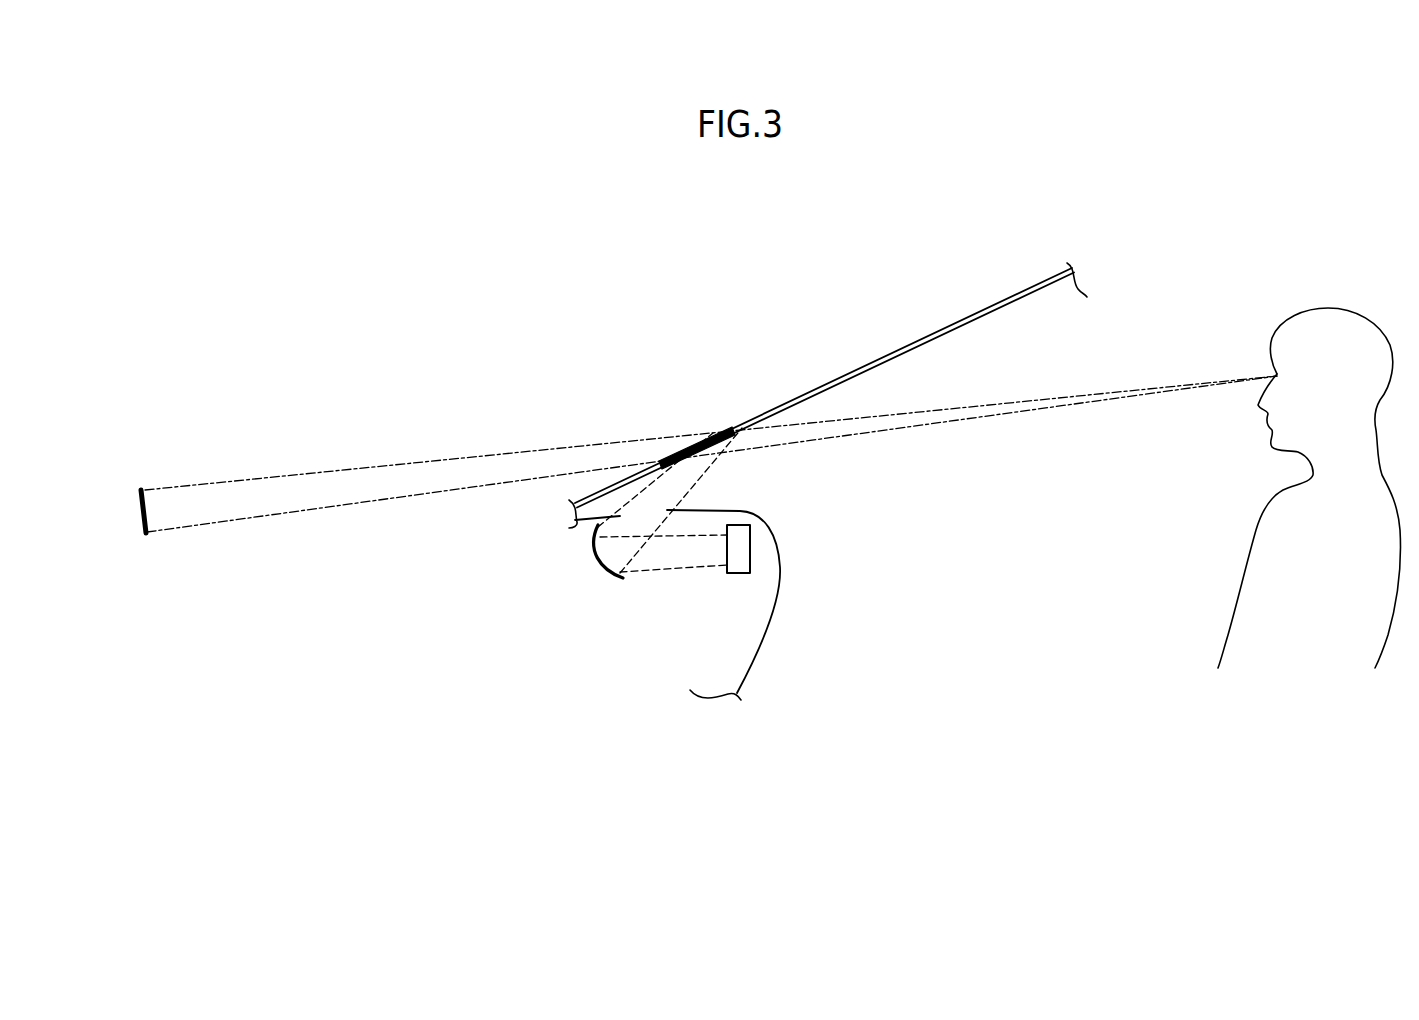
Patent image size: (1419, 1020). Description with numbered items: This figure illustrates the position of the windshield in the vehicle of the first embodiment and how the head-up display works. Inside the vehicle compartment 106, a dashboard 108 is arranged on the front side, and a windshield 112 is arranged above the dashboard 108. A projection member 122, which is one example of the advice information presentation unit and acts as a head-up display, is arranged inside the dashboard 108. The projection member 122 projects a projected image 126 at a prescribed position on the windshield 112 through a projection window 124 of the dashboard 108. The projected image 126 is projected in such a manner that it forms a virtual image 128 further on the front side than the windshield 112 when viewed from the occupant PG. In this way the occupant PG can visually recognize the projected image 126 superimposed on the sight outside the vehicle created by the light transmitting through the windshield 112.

The vehicle compartment 106 is at (1018, 672).
The dashboard 108 is at (780, 587).
The windshield 112 is at (877, 360).
The projection member 122 is at (605, 583).
The projection window 124 is at (667, 510).
The projected image 126 is at (700, 443).
The virtual image 128 is at (138, 498).
The occupant PG is at (1329, 306).